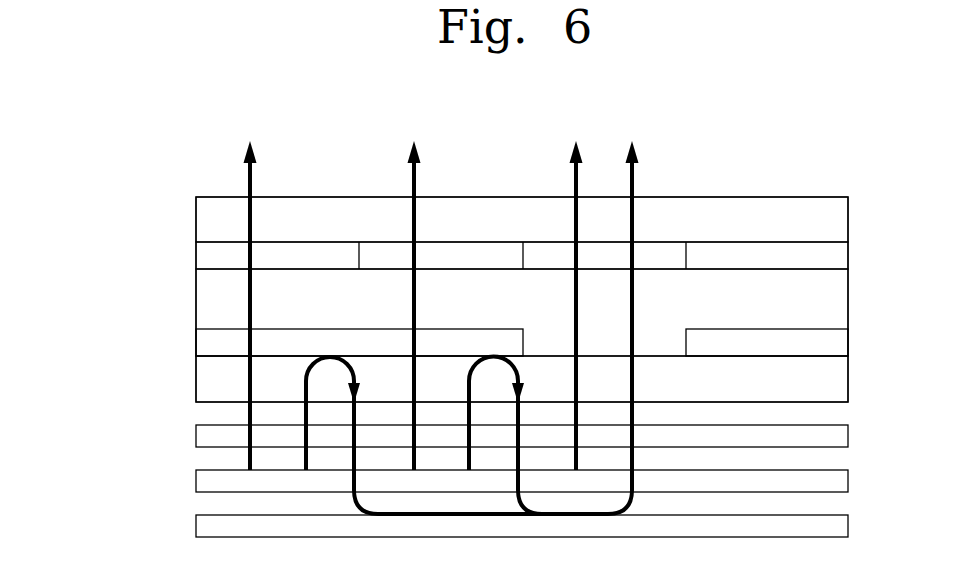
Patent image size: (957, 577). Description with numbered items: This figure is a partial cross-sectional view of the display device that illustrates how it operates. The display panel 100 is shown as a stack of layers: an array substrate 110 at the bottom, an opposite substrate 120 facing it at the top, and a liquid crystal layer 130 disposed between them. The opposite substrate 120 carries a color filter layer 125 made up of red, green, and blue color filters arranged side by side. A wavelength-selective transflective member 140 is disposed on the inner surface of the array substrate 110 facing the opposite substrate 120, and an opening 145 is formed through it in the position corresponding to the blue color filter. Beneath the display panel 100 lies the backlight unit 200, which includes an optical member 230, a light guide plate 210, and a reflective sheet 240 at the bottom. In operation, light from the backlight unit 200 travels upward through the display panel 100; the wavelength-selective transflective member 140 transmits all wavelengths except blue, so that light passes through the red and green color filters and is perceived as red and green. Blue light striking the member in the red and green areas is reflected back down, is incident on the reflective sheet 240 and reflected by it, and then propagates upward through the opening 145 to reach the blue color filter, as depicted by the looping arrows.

The display panel 100 is at (112, 212).
The array substrate 110 is at (207, 380).
The opposite substrate 120 is at (207, 223).
The color filter layer 125 is at (207, 259).
The liquid crystal layer 130 is at (207, 297).
The wavelength-selective transflective member 140 is at (207, 342).
The opening 145 is at (660, 338).
The backlight unit 200 is at (112, 428).
The light guide plate 210 is at (207, 482).
The optical member 230 is at (207, 440).
The reflective sheet 240 is at (207, 524).